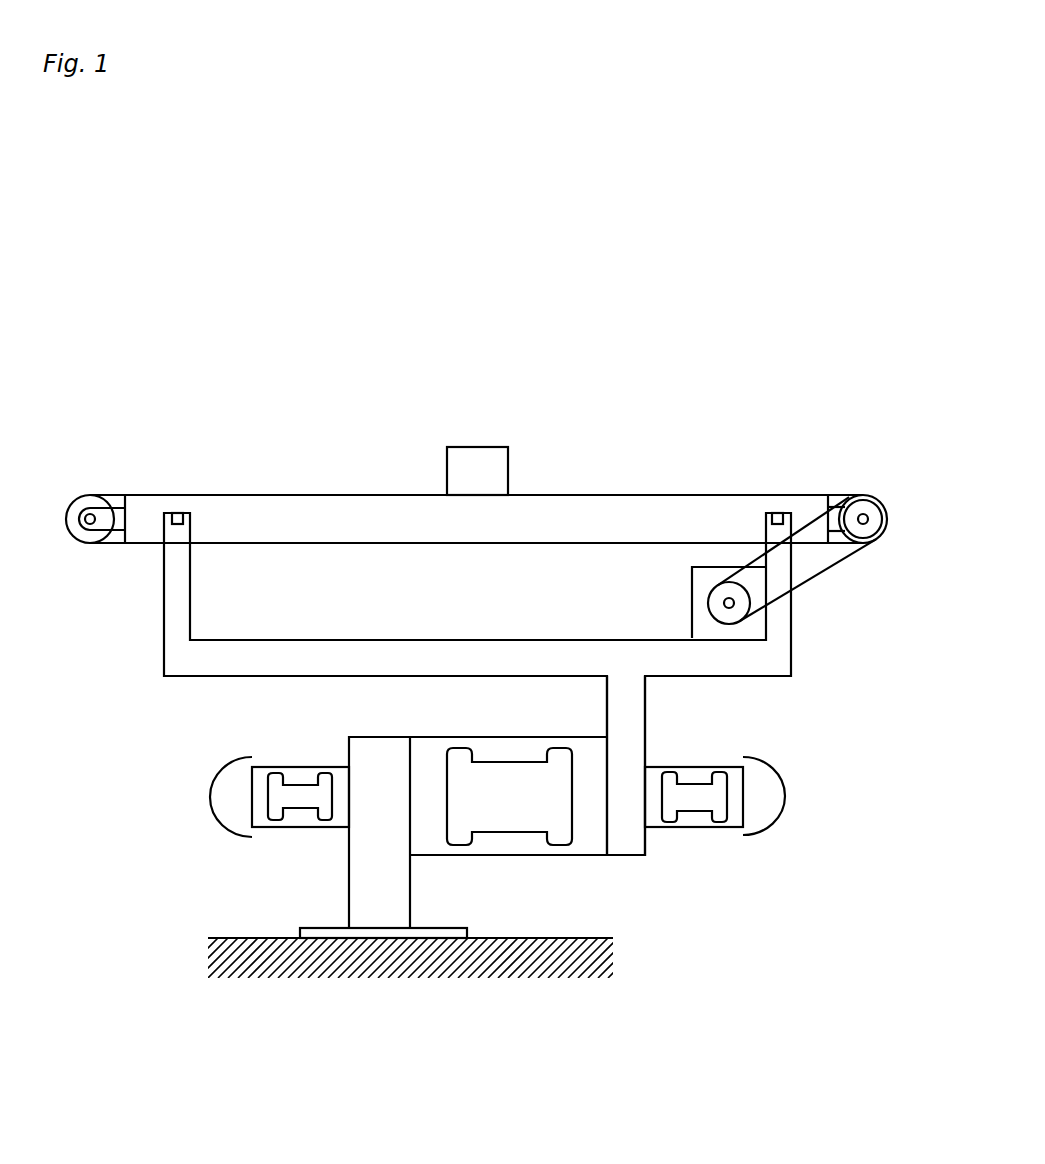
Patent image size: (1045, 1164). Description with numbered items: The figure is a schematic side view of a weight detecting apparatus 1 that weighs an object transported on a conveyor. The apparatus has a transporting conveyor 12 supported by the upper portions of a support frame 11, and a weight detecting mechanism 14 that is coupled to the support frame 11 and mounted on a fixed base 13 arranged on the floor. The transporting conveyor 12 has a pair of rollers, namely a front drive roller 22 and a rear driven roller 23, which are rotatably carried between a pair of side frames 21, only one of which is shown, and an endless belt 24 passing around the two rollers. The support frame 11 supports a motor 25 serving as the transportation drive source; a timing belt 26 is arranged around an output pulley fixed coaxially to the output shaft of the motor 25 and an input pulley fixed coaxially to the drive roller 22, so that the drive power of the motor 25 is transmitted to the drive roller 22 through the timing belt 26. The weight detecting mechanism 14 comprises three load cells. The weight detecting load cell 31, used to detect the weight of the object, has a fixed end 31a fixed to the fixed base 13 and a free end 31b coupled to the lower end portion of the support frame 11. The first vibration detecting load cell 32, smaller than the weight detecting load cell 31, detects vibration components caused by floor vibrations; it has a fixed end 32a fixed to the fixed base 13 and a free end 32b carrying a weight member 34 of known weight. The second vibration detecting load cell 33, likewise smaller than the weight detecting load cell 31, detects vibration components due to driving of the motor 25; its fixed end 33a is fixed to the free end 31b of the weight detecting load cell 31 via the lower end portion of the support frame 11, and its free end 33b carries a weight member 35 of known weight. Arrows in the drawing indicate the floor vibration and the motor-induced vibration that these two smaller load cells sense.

The weight detecting apparatus 1 is at (822, 447).
The support frame 11 is at (405, 653).
The transporting conveyor 12 is at (637, 490).
The fixed base 13 is at (393, 748).
The weight detecting mechanism 14 is at (207, 755).
The side frame 21 is at (318, 508).
The front drive roller 22 is at (862, 494).
The rear driven roller 23 is at (92, 537).
The endless belt 24 is at (115, 495).
The motor 25 is at (698, 590).
The timing belt 26 is at (833, 562).
The weight detecting load cell 31 is at (510, 860).
The fixed end 31a is at (423, 750).
The free end 31b is at (590, 845).
The first vibration detecting load cell 32 is at (278, 765).
The fixed end 32a is at (338, 770).
The free end 32b is at (260, 820).
The second vibration detecting load cell 33 is at (713, 763).
The fixed end 33a is at (657, 770).
The free end 33b is at (728, 822).
The weight member 34 is at (233, 827).
The weight member 35 is at (760, 828).